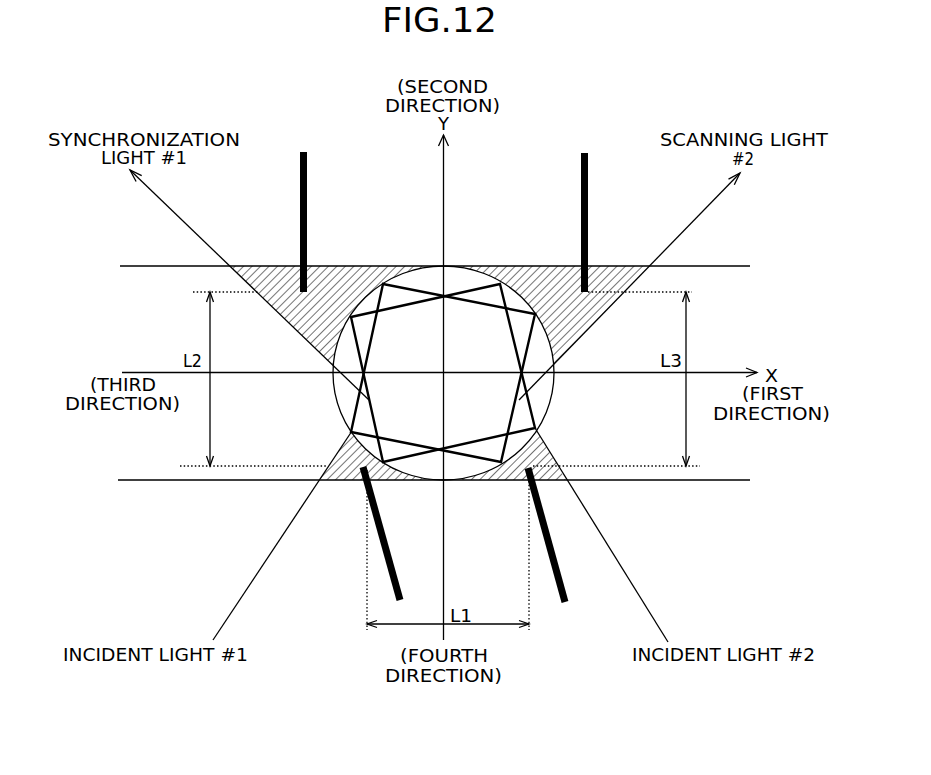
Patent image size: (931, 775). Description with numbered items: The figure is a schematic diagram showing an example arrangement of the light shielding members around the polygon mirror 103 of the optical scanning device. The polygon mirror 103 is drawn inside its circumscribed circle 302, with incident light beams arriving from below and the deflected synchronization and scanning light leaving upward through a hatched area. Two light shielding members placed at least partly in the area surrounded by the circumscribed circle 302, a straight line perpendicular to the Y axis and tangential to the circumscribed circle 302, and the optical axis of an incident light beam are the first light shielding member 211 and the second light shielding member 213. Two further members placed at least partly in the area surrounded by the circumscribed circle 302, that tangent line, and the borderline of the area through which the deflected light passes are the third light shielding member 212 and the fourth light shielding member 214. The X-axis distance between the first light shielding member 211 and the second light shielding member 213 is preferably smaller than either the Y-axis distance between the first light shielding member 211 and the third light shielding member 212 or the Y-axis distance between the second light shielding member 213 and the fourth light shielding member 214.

The polygon mirror 103 is at (402, 296).
The circumscribed circle 302 is at (555, 378).
The first light shielding member 211 is at (388, 569).
The third light shielding member 212 is at (307, 181).
The second light shielding member 213 is at (567, 593).
The fourth light shielding member 214 is at (588, 183).